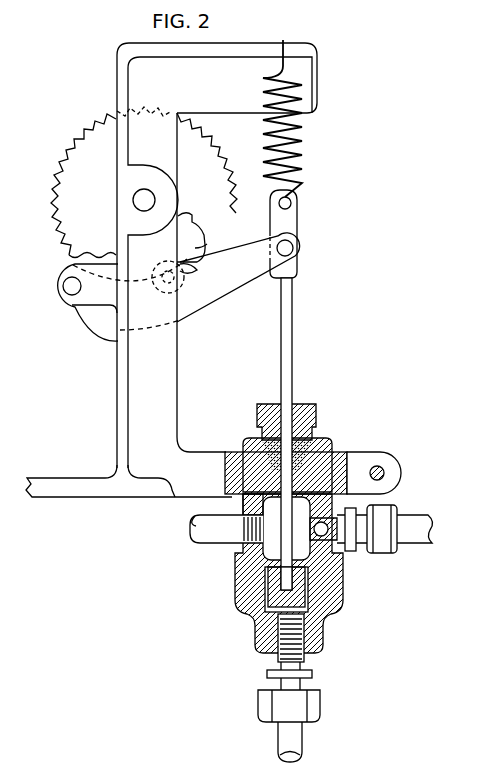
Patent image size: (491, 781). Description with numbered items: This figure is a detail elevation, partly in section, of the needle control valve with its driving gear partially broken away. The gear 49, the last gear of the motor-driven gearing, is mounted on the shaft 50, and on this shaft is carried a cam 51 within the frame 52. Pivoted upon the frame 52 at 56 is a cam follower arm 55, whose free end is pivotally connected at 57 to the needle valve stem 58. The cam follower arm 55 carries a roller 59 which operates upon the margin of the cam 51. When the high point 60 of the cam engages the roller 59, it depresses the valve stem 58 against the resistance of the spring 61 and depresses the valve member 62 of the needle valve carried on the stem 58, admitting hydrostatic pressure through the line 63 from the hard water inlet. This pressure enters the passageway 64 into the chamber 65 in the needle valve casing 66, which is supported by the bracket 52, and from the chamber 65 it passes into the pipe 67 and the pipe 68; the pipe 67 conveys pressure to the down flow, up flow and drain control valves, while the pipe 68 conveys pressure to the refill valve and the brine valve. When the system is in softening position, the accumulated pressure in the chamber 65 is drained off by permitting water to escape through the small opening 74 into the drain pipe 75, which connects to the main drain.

The gear 49 is at (77, 137).
The shaft 50 is at (134, 193).
The cam 51 is at (207, 222).
The frame 52 is at (134, 78).
The cam follower arm 55 is at (196, 305).
The pivot 56 is at (63, 286).
The pivotal connection 57 is at (297, 250).
The needle valve stem 58 is at (293, 332).
The roller 59 is at (198, 266).
The high point of cam 60 is at (207, 244).
The spring 61 is at (305, 144).
The valve member 62 is at (308, 605).
The line 63 is at (297, 745).
The passageway 64 is at (248, 568).
The chamber 65 is at (270, 543).
The needle valve casing 66 is at (242, 442).
The pipe 67 is at (197, 516).
The pipe 68 is at (242, 507).
The small opening 74 is at (332, 540).
The drain pipe 75 is at (415, 545).